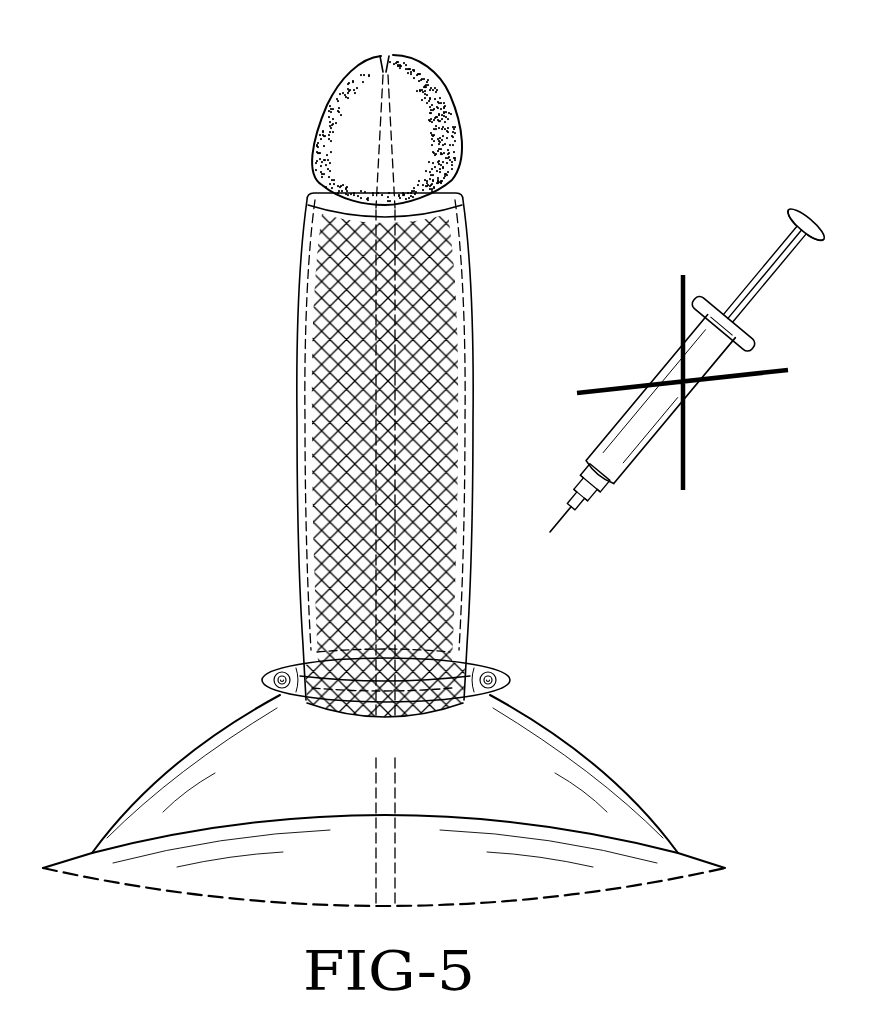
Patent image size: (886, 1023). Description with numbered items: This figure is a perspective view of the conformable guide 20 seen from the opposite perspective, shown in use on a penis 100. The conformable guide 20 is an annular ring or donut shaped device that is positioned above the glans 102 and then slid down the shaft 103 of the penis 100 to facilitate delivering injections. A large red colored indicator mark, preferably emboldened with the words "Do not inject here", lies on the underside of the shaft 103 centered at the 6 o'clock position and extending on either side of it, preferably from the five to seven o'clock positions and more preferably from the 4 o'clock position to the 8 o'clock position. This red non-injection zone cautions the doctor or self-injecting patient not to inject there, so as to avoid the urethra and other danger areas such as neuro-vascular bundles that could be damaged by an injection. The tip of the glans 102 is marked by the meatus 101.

The penis 100 is at (445, 103).
The urethral meatus / tip marking 101 is at (379, 54).
The glans 102 is at (335, 150).
The shaft 103 is at (350, 380).
The conformable guide 20 is at (264, 669).
The 8 o'clock position 8 is at (211, 781).
The 6 o'clock position 6 is at (384, 816).
The 4 o'clock position 4 is at (559, 781).